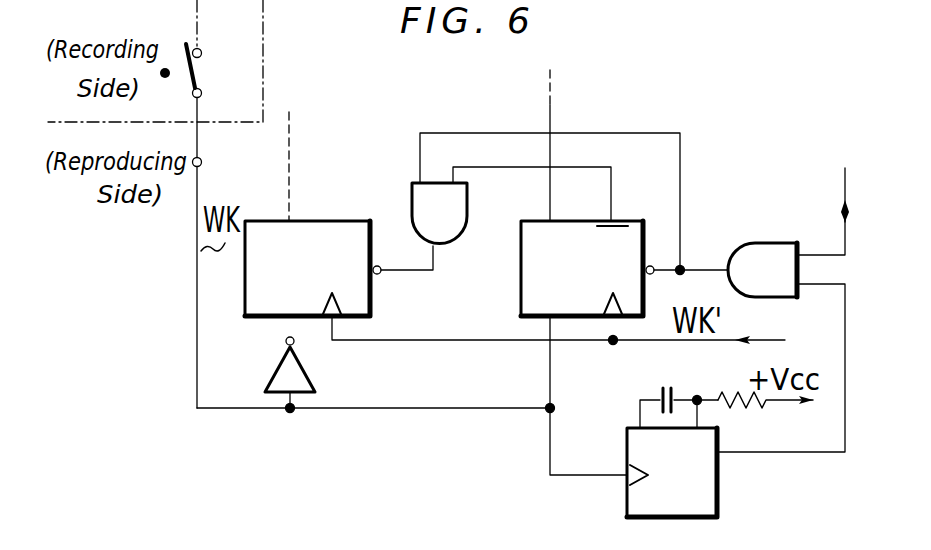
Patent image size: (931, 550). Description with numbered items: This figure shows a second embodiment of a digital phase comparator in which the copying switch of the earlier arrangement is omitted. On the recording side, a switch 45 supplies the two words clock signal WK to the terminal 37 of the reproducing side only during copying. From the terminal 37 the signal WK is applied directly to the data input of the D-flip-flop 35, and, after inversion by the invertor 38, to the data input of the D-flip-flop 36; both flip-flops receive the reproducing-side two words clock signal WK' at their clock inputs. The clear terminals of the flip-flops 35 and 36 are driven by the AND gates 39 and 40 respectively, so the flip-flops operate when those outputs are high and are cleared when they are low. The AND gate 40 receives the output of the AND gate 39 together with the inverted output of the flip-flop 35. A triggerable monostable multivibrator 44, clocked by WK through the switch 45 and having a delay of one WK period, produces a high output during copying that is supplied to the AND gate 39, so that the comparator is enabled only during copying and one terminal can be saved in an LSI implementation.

The switch 45 is at (194, 73).
The terminal 37 is at (202, 160).
The D-flip-flop 36 is at (351, 220).
The AND gate 40 is at (467, 208).
The D-flip-flop 35 is at (632, 222).
The AND gate 39 is at (774, 244).
The invertor 38 is at (275, 369).
The triggerable monostable multivibrator 44 is at (719, 487).